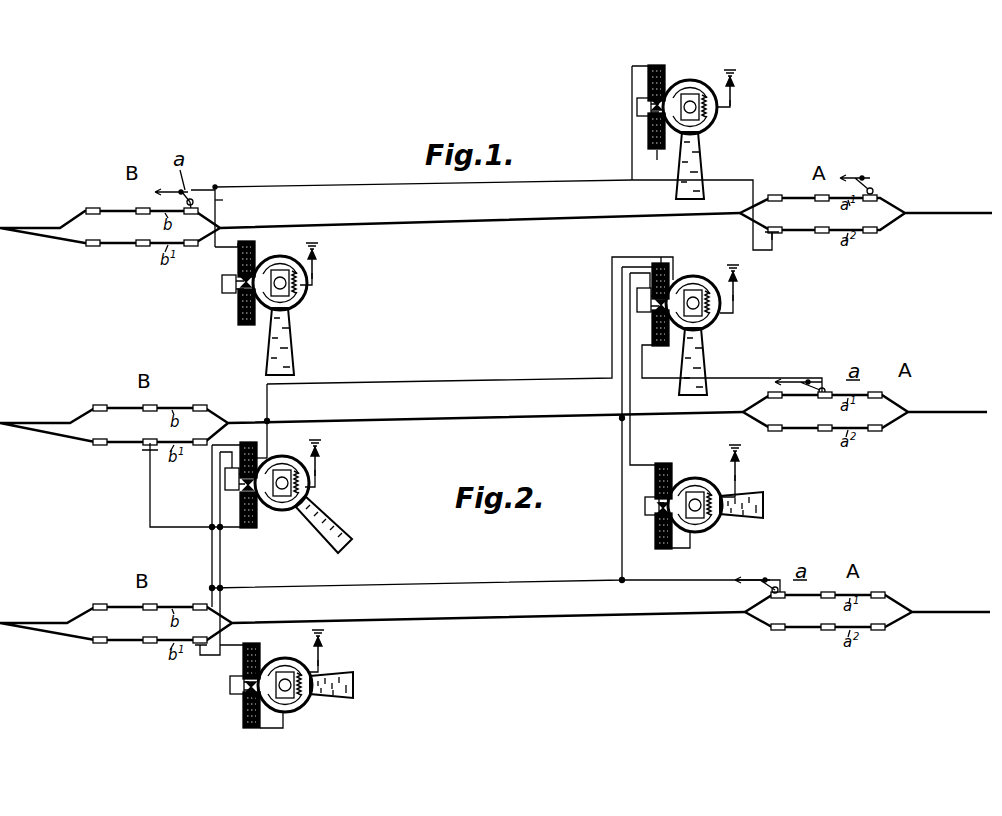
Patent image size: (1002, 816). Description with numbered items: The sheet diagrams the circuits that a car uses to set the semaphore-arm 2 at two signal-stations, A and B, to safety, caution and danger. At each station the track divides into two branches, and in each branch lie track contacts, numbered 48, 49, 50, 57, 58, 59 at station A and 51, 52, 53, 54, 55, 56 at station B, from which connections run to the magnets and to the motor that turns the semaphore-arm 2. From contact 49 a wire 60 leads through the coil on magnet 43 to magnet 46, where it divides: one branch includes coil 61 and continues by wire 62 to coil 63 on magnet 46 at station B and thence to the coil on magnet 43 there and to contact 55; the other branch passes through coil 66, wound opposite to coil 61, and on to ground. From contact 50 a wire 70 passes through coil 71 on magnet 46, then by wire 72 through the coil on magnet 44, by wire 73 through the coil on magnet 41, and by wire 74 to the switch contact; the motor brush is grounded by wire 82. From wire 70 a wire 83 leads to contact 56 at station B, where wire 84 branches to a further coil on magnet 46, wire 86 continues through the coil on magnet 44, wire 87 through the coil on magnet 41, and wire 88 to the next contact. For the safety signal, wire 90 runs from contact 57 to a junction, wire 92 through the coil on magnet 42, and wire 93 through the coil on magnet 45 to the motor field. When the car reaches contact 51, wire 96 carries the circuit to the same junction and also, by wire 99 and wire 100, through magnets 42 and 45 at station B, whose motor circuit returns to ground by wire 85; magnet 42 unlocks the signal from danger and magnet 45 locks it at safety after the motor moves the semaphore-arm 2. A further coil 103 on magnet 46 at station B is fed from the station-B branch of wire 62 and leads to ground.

In FIG. 1, the semaphore-arm 2 is at (700, 162).
In FIG. 2, the semaphore-arm 2 is at (708, 362).
In FIG. 2, the magnet 41 is at (663, 549).
In FIG. 1, the magnet 42 is at (666, 70).
In FIG. 2, the magnet 43 is at (652, 335).
In FIG. 2, the magnet 44 is at (665, 464).
In FIG. 1, the magnet 45 is at (648, 136).
In FIG. 2, the magnet 46 is at (673, 262).
In FIG. 1, the contact 48 is at (862, 198).
In FIG. 1, the contact 49 is at (817, 210).
In FIG. 1, the contact 50 is at (779, 208).
In FIG. 2, the contact 50 is at (780, 598).
In FIG. 1, the contact 51 is at (193, 219).
In FIG. 1, the contact 52 is at (144, 221).
In FIG. 1, the contact 53 is at (96, 221).
In FIG. 1, the contact 54 is at (96, 253).
In FIG. 1, the contact 55 is at (144, 253).
In FIG. 1, the contact 56 is at (193, 253).
In FIG. 1, the contact 57 is at (779, 233).
In FIG. 1, the contact 58 is at (823, 241).
In FIG. 1, the contact 59 is at (870, 233).
In FIG. 2, the wire 60 is at (810, 380).
In FIG. 2, the coil 61 is at (672, 281).
In FIG. 2, the wire 62 is at (612, 257).
In FIG. 2, the coil 63 is at (270, 457).
In FIG. 2, the coil 66 is at (700, 287).
In FIG. 2, the wire 70 is at (622, 440).
In FIG. 2, the coil 71 is at (661, 262).
In FIG. 2, the wire 72 is at (630, 440).
In FIG. 2, the wire 73 is at (645, 505).
In FIG. 2, the wire 74 is at (692, 546).
In FIG. 1, the wire 82 is at (733, 95).
In FIG. 2, the wire 82 is at (736, 293).
In FIG. 2, the wire 83 is at (490, 582).
In FIG. 2, the wire 84 is at (212, 547).
In FIG. 1, the wire 85 is at (315, 270).
In FIG. 2, the wire 85 is at (318, 470).
In FIG. 2, the wire 86 is at (220, 549).
In FIG. 2, the wire 87 is at (230, 685).
In FIG. 2, the wire 88 is at (283, 729).
In FIG. 1, the wire 90 is at (753, 180).
In FIG. 1, the wire 92 is at (423, 173).
In FIG. 1, the wire 93 is at (637, 105).
In FIG. 1, the wire 96 is at (215, 186).
In FIG. 1, the wire 99 is at (231, 200).
In FIG. 1, the wire 100 is at (228, 293).
In FIG. 2, the coil 103 is at (225, 482).